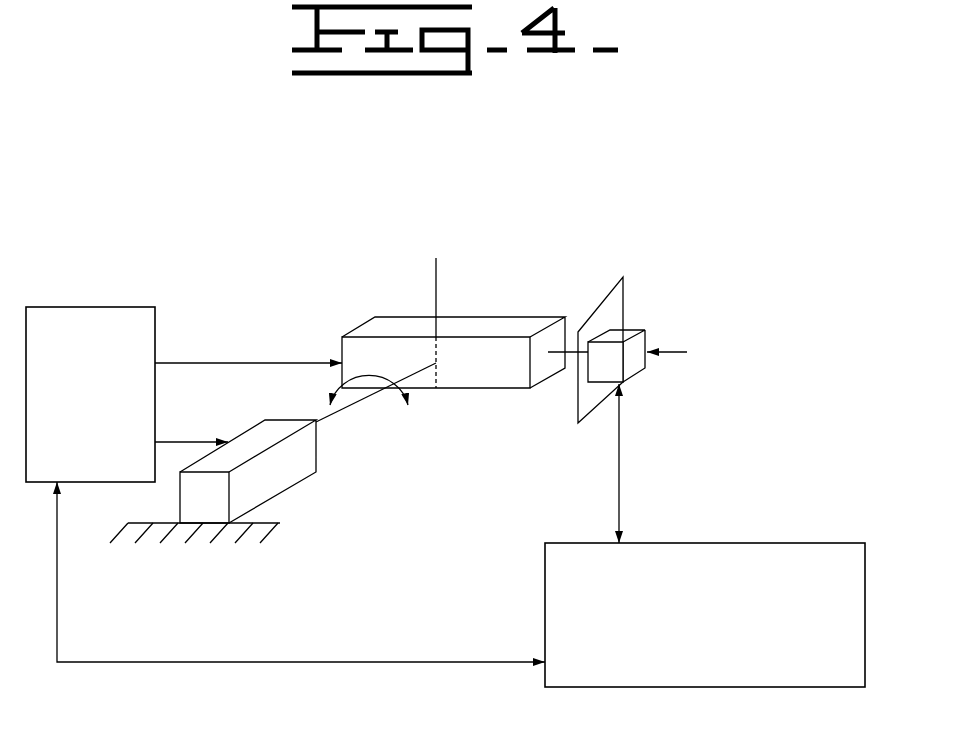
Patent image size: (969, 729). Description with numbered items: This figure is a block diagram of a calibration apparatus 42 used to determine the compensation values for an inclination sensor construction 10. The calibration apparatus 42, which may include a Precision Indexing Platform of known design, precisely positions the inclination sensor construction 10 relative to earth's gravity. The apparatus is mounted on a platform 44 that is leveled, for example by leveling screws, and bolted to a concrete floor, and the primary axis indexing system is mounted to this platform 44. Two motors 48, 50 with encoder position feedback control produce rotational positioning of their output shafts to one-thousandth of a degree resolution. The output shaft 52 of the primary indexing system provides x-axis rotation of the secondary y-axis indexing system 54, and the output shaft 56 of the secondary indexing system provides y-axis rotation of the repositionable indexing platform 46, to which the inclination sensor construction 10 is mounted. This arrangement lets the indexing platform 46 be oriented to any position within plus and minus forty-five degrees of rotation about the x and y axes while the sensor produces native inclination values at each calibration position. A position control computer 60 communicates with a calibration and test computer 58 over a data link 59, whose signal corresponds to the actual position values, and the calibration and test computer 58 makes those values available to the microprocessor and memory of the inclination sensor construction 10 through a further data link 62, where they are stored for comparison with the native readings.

The calibration apparatus 42 is at (213, 235).
The position control computer (PCC) 60 is at (83, 307).
The platform 44 is at (137, 533).
The motor 48 is at (284, 483).
The motor 50 is at (354, 330).
The secondary y-axis indexing system 54 is at (436, 297).
The output shaft of the primary indexing system 52 is at (367, 407).
The output shaft of the secondary indexing system 56 is at (570, 338).
The indexing platform 46 is at (615, 283).
The inclination sensor construction 10 is at (648, 333).
The data link 62 is at (619, 443).
The calibration and test computer (CTC) 58 is at (768, 543).
The data link 59 is at (97, 662).